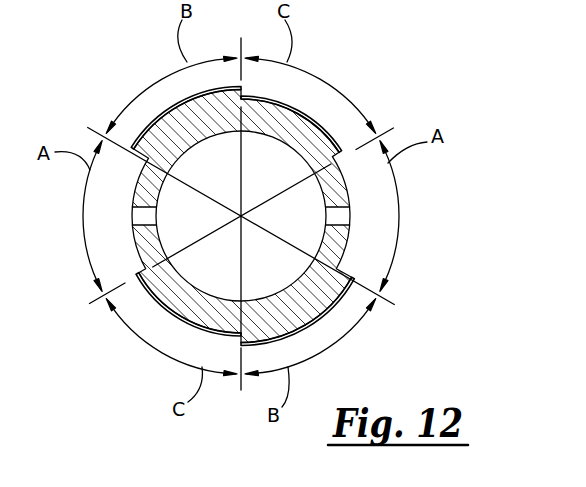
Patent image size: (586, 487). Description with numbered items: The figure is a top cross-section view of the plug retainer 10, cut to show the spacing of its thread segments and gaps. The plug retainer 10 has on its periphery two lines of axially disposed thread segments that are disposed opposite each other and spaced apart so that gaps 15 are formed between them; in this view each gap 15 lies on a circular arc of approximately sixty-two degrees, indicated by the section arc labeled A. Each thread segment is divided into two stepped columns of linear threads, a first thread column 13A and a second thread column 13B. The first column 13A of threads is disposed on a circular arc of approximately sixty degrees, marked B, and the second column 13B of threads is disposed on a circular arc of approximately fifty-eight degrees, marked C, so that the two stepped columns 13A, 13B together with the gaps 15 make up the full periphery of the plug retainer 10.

The plug retainer 10 is at (330, 235).
The first thread column 13A is at (172, 103).
The second thread column 13B is at (298, 106).
The gap 15 is at (133, 251).